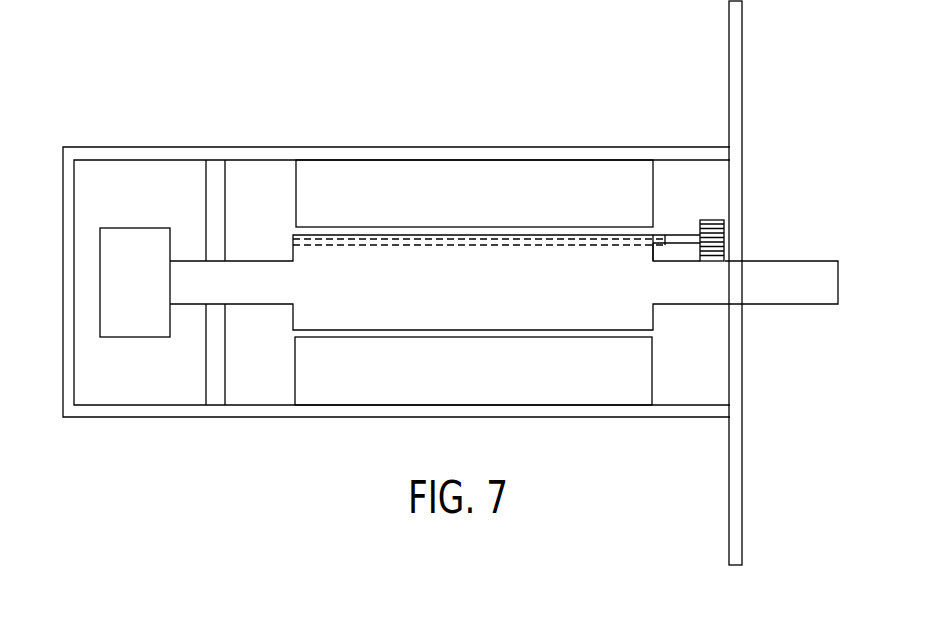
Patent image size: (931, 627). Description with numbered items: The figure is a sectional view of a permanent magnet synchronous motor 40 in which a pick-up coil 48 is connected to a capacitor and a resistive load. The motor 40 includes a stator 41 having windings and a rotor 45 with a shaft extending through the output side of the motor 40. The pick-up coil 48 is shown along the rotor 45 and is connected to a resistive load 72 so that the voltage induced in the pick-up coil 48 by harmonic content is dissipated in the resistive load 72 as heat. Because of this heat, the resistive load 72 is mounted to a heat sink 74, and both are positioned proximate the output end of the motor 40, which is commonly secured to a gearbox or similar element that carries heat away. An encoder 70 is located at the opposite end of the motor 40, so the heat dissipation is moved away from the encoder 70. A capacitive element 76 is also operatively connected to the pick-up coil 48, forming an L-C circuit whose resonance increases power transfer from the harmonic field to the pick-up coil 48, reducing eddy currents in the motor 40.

The synchronous motor 40 is at (132, 115).
The stator 41 is at (489, 205).
The rotor 45 is at (489, 296).
The pick-up coil 48 is at (292, 240).
The encoder 70 is at (152, 227).
The resistive load 72 is at (702, 220).
The heat sink 74 is at (713, 220).
The capacitive element 76 is at (664, 239).